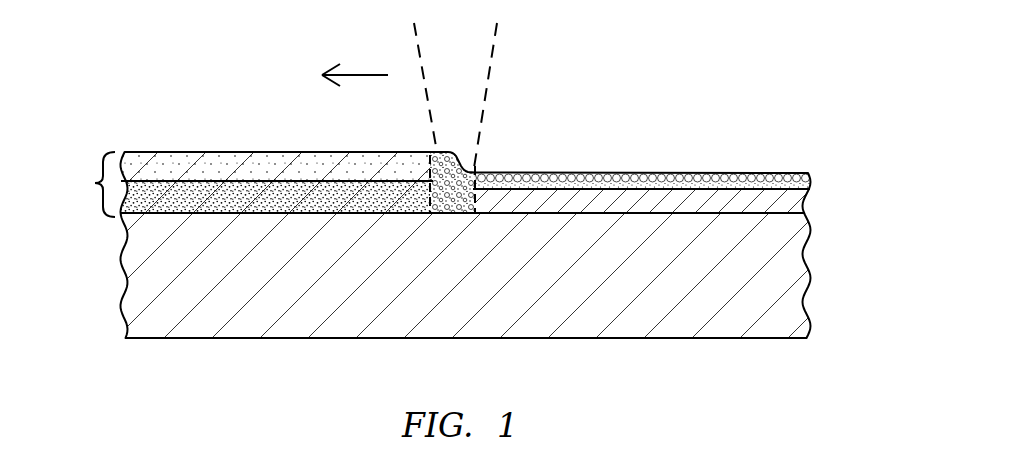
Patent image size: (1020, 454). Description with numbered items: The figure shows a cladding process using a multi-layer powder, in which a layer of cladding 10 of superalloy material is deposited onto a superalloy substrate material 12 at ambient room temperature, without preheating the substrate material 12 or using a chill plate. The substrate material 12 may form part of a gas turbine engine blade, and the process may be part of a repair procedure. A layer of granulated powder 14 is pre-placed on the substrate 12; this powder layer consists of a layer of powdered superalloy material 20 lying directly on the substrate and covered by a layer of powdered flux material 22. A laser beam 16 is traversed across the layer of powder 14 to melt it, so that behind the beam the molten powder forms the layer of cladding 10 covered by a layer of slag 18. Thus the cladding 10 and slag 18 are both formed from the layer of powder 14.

The layer of cladding 10 is at (797, 207).
The superalloy substrate material 12 is at (795, 283).
The layer of granulated powder 14 is at (94, 182).
The laser beam 16 is at (485, 81).
The layer of slag 18 is at (792, 180).
The layer of powdered superalloy material 20 is at (192, 197).
The layer of powdered flux material 22 is at (267, 167).